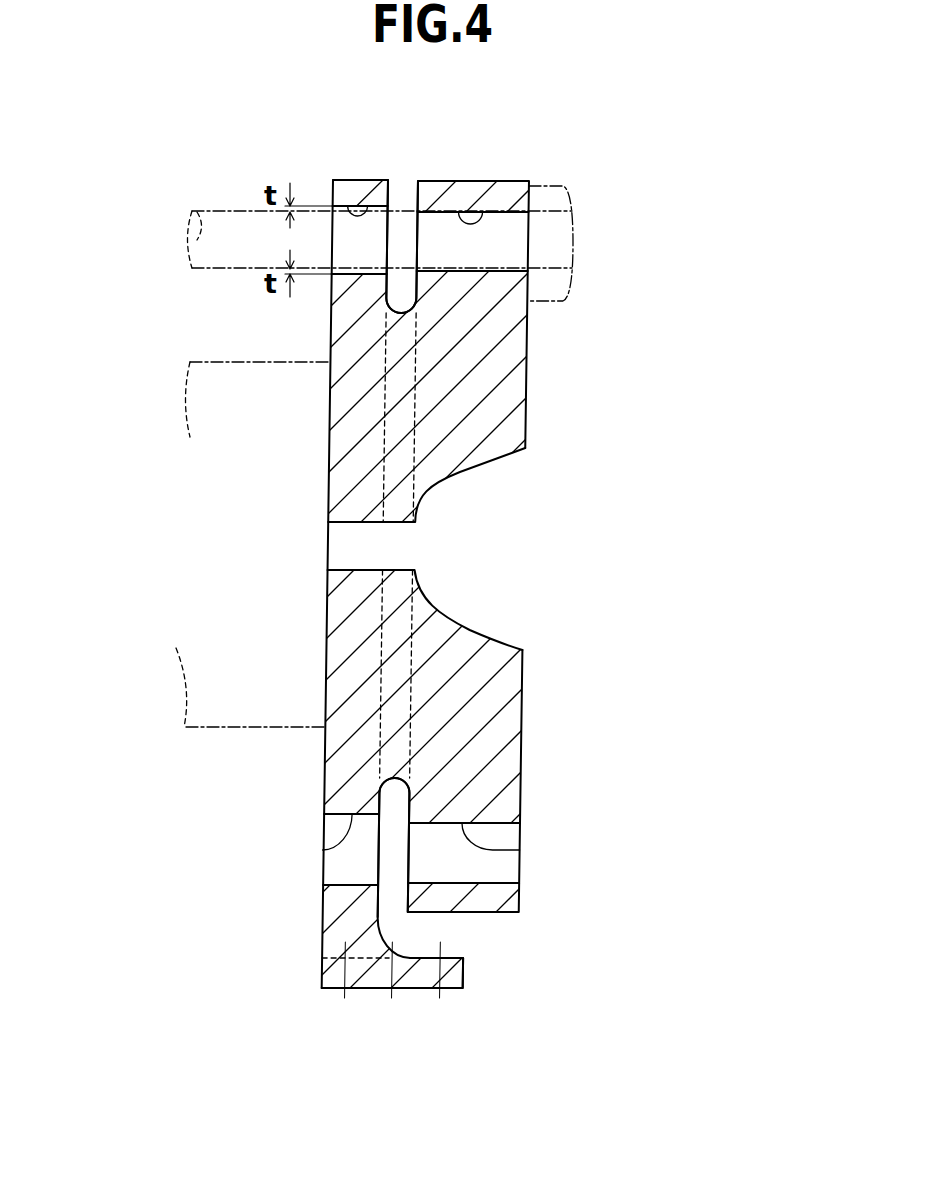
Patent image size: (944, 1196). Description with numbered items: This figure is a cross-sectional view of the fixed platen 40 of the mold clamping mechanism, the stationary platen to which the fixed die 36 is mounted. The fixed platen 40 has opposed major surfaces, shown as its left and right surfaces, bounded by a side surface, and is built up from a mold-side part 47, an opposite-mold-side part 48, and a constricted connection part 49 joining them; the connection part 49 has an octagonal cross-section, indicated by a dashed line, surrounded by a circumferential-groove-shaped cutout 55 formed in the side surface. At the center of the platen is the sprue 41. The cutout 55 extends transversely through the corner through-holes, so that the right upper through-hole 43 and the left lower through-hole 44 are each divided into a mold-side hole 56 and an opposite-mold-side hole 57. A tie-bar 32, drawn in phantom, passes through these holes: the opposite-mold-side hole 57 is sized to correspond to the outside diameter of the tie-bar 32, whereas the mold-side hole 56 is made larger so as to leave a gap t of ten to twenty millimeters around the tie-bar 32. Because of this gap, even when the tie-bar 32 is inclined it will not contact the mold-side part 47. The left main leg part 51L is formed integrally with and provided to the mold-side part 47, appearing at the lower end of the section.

The tie-bar 32 is at (228, 210).
The fixed die 36 is at (213, 362).
The fixed platen 40 is at (627, 159).
The sprue 41 is at (437, 490).
The right upper through-hole 43 is at (565, 247).
The left lower through-hole 44 is at (567, 887).
The mold-side part 47 is at (332, 330).
The opposite-mold-side part 48 is at (500, 417).
The constricted connection part 49 is at (400, 333).
The left main leg part 51L is at (374, 977).
The circumferential-groove-shaped cutout 55 is at (401, 297).
The mold-side hole 56 is at (350, 205).
The opposite-mold-side hole 57 is at (463, 212).